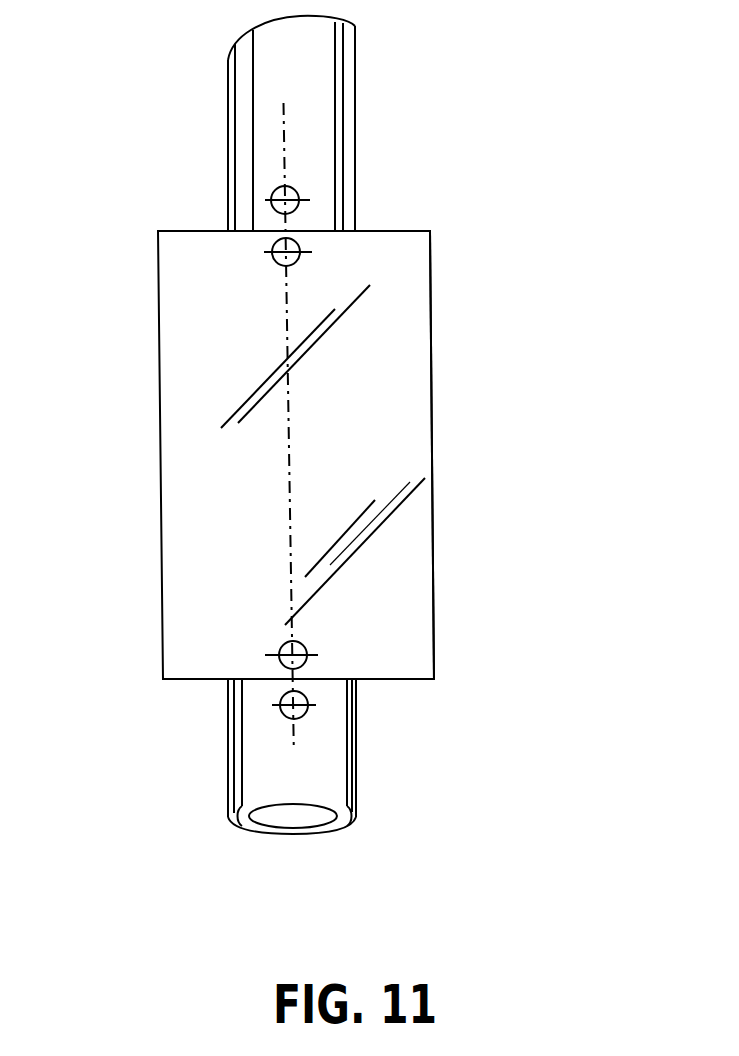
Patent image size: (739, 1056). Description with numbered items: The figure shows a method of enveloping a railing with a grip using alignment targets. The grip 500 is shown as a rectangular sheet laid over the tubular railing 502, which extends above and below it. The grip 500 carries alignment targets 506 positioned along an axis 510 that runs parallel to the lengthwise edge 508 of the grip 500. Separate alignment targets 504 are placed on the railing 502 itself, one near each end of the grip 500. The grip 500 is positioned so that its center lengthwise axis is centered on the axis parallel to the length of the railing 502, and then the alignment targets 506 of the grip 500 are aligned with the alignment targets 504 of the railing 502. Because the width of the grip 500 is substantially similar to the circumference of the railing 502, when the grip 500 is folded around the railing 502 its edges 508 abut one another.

The grip 500 is at (432, 434).
The railing 502 is at (357, 818).
The alignment targets 504 is at (296, 192).
The alignment targets 506 is at (303, 240).
The lengthwise edge 508 is at (433, 578).
The axis 510 is at (290, 505).